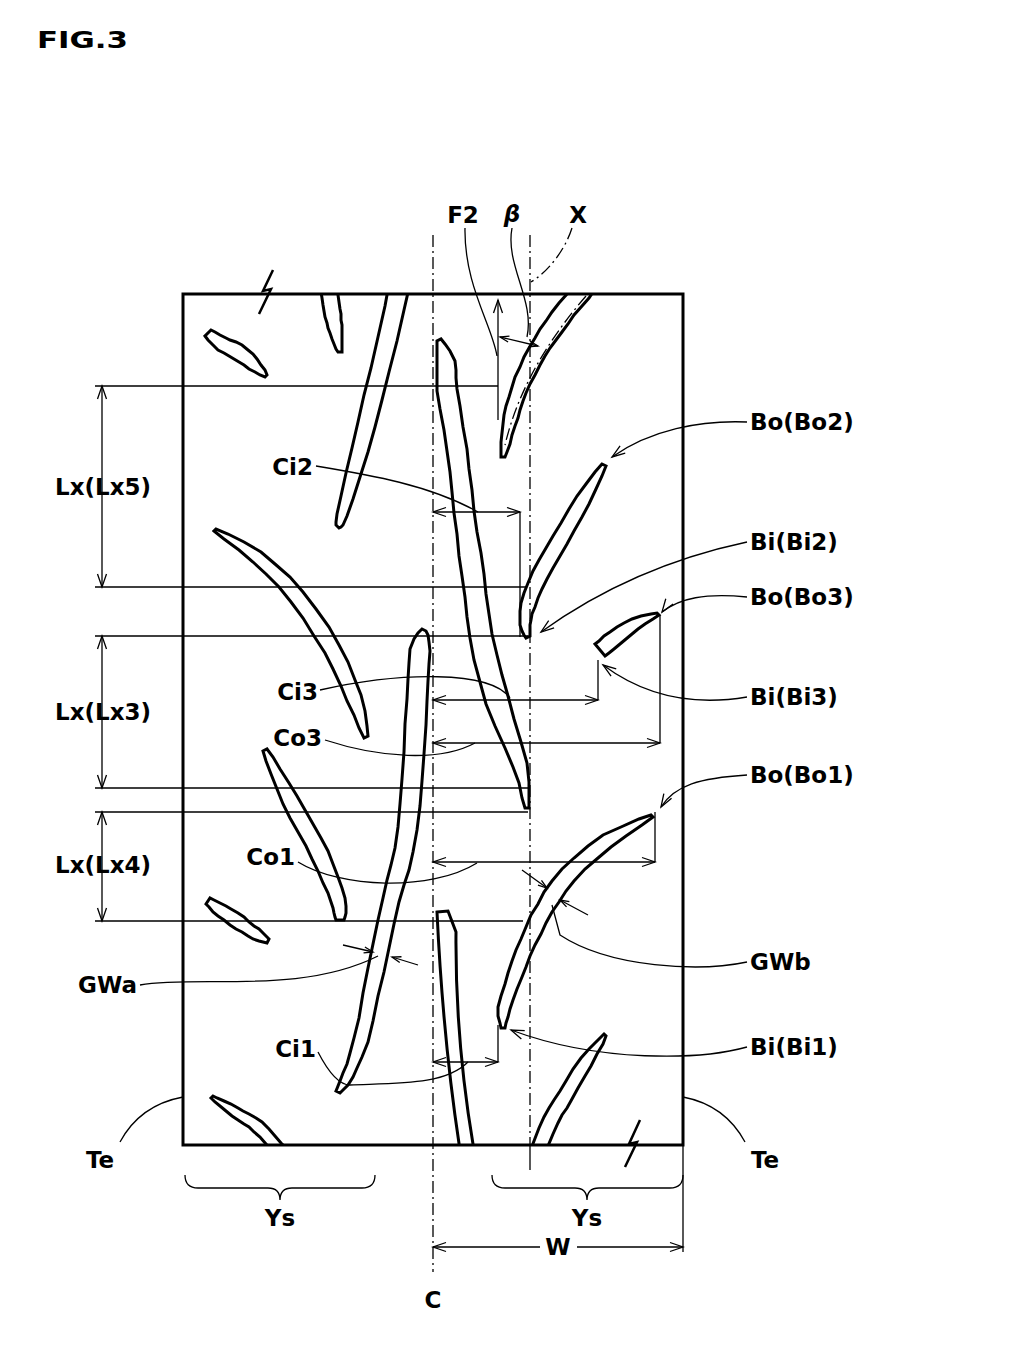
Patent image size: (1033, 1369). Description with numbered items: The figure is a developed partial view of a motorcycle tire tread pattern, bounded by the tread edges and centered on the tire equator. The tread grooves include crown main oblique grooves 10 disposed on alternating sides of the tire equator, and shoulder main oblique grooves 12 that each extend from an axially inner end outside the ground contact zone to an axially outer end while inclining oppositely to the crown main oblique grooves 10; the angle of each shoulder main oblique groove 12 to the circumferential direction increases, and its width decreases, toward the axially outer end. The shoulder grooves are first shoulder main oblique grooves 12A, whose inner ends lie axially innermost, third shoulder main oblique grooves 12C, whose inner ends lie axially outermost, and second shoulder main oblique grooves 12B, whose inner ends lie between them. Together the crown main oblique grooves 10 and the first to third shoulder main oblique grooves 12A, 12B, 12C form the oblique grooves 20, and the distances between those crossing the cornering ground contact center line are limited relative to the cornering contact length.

The crown main oblique groove 10 is at (443, 376).
The shoulder main oblique groove 12 is at (675, 654).
The first shoulder main oblique groove 12A is at (582, 343).
The second shoulder main oblique groove 12B is at (573, 528).
The third shoulder main oblique groove 12C is at (620, 647).
The oblique groove 20 is at (462, 621).